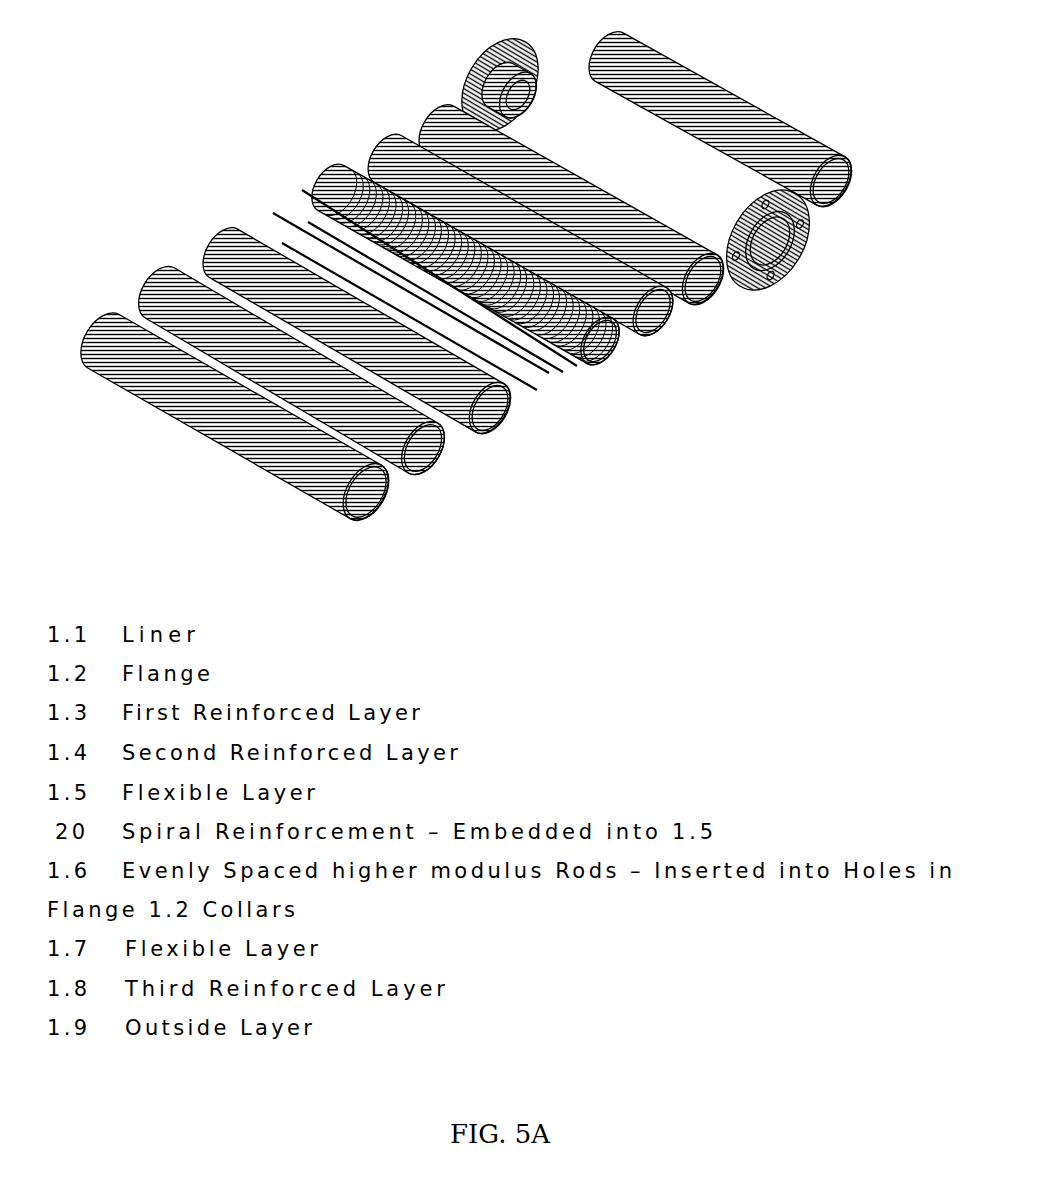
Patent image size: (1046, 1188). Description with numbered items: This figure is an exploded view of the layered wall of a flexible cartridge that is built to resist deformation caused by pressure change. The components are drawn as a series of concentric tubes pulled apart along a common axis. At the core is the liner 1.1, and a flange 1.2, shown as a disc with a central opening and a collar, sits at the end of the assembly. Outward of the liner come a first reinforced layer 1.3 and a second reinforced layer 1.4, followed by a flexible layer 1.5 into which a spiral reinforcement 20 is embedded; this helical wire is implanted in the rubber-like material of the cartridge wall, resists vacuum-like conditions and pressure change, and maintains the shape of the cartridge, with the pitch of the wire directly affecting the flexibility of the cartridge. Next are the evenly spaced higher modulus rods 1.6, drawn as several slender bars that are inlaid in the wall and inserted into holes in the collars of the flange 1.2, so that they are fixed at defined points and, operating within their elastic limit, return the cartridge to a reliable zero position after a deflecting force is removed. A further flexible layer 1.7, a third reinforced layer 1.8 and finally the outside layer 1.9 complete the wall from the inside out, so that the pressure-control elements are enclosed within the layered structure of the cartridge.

The liner 1.1 is at (850, 193).
The flange 1.2 is at (795, 262).
The first reinforced layer 1.3 is at (712, 290).
The second reinforced layer 1.4 is at (668, 313).
The flexible layer 1.5 is at (618, 347).
The spiral reinforcement 20 is at (617, 352).
The evenly spaced higher modulus rods 1.6 is at (547, 375).
The flexible layer 1.7 is at (482, 420).
The third reinforced layer 1.8 is at (420, 460).
The outside layer 1.9 is at (365, 505).